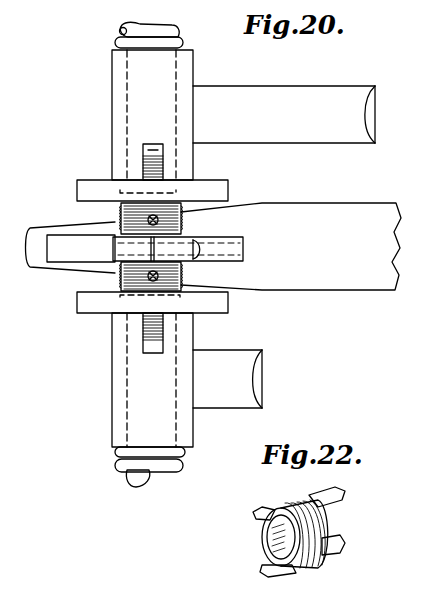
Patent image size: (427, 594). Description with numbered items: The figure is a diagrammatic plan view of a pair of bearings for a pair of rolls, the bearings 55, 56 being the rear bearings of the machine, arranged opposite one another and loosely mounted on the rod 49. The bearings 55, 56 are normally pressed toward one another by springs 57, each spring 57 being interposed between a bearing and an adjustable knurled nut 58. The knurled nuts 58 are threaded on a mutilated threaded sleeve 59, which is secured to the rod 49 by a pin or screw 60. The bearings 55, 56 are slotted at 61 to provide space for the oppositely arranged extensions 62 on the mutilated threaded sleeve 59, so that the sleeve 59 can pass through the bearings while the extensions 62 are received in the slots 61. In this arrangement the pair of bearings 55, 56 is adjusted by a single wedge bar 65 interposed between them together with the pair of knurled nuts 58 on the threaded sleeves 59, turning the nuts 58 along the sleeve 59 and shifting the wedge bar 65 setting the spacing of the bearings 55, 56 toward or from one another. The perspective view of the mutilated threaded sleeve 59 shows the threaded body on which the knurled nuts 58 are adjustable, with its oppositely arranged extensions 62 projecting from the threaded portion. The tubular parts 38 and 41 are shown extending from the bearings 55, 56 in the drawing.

In FIG. 20, the tube 38 is at (248, 368).
In FIG. 20, the tube 41 is at (315, 137).
In FIG. 20, the rod 49 is at (135, 487).
In FIG. 20, the bearing 55 is at (119, 404).
In FIG. 20, the bearing 56 is at (123, 100).
In FIG. 20, the spring 57 is at (116, 43).
In FIG. 20, the knurled nut 58 is at (228, 186).
In FIG. 20, the threaded mutilated sleeve 59 is at (128, 278).
In FIG. 22, the threaded mutilated sleeve 59 is at (285, 506).
In FIG. 20, the pin or screw 60 is at (121, 214).
In FIG. 20, the slot 61 is at (156, 145).
In FIG. 20, the extension 62 is at (163, 171).
In FIG. 22, the extension 62 is at (253, 513).
In FIG. 20, the wedge bar 65 is at (214, 246).